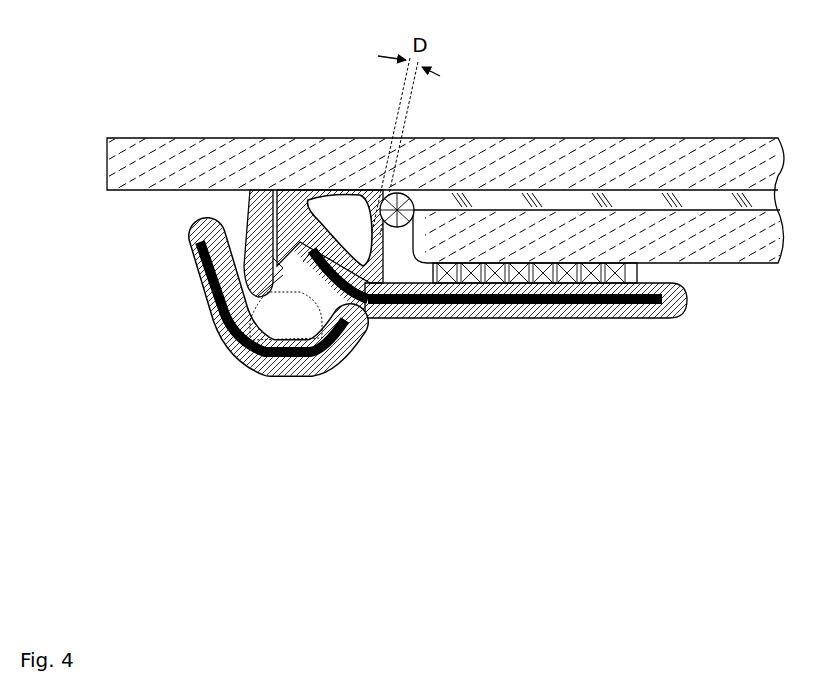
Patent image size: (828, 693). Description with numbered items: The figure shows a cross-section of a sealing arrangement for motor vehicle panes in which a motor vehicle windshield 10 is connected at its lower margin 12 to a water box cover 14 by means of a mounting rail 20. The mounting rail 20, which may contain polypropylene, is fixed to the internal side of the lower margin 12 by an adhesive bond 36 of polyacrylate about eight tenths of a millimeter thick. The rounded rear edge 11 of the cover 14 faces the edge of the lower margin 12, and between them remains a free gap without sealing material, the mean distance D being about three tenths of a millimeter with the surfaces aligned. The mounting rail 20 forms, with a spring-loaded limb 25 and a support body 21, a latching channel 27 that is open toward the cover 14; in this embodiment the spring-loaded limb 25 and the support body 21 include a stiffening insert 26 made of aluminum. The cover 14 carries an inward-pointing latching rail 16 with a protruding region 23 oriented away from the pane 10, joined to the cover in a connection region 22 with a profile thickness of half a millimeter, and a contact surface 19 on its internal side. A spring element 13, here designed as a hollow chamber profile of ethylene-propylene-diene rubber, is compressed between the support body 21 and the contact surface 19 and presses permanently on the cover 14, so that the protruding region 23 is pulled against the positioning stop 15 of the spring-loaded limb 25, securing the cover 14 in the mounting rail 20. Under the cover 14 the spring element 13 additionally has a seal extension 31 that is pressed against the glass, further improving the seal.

The motor vehicle windshield 10 is at (532, 132).
The rear edge 11 is at (357, 148).
The lower margin 12 is at (406, 163).
The spring element 13 is at (375, 285).
The water box cover 14 is at (205, 137).
The positioning stop 15 is at (282, 260).
The latching rail 16 is at (262, 230).
The contact surface 19 is at (320, 178).
The mounting rail 20 is at (440, 328).
The support body 21 is at (303, 262).
The connection region 22 is at (260, 182).
The protruding region 23 is at (282, 275).
The spring-loaded limb 25 is at (205, 278).
The stiffening insert 26 is at (218, 293).
The latching channel 27 is at (273, 320).
The seal extension 31 is at (389, 220).
The adhesive bond 36 is at (557, 285).